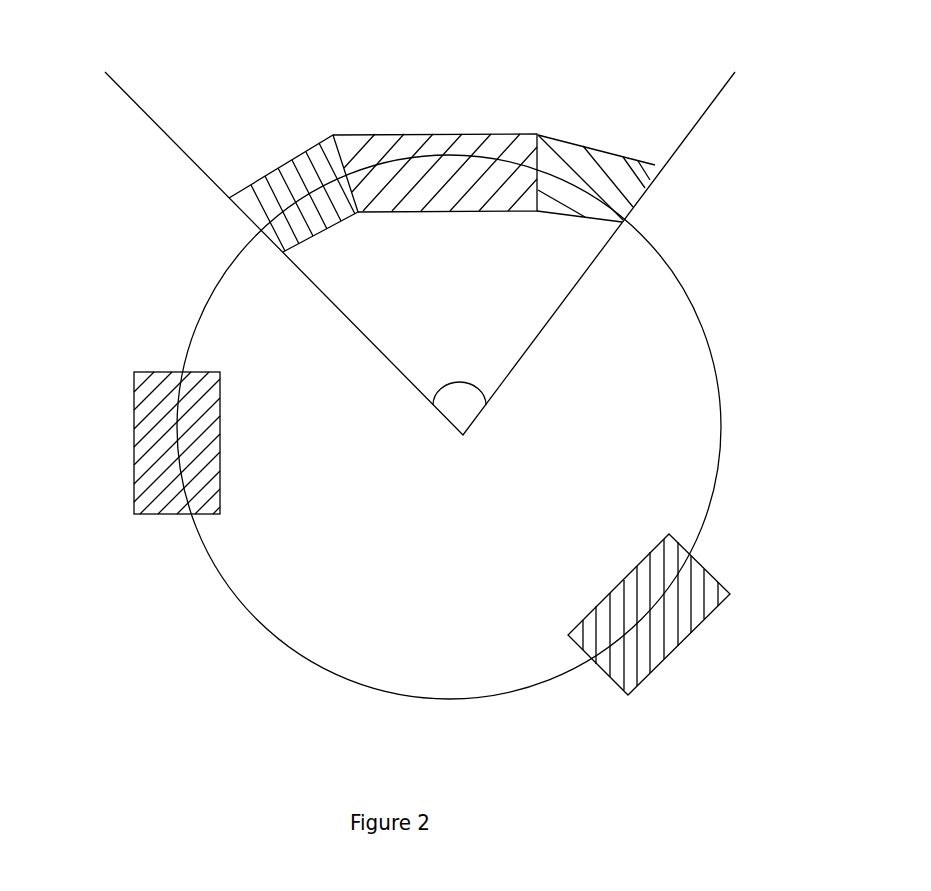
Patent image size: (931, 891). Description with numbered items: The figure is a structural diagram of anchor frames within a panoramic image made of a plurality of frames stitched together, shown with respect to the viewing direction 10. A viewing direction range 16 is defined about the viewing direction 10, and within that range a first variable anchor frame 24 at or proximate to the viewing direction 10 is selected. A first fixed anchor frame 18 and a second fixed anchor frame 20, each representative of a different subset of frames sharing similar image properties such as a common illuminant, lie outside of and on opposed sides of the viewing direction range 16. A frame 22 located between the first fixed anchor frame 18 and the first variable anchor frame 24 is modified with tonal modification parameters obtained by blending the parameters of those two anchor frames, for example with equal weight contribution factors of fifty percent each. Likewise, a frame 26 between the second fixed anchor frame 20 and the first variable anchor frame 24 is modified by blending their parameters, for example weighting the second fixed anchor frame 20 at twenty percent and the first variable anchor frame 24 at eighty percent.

The viewing direction 10 is at (132, 100).
The viewing direction range 16 is at (455, 380).
The first fixed anchor frame 18 is at (132, 495).
The second fixed anchor frame 20 is at (722, 583).
The frame 22 is at (303, 173).
The first variable anchor frame 24 is at (475, 150).
The frame 26 is at (603, 168).